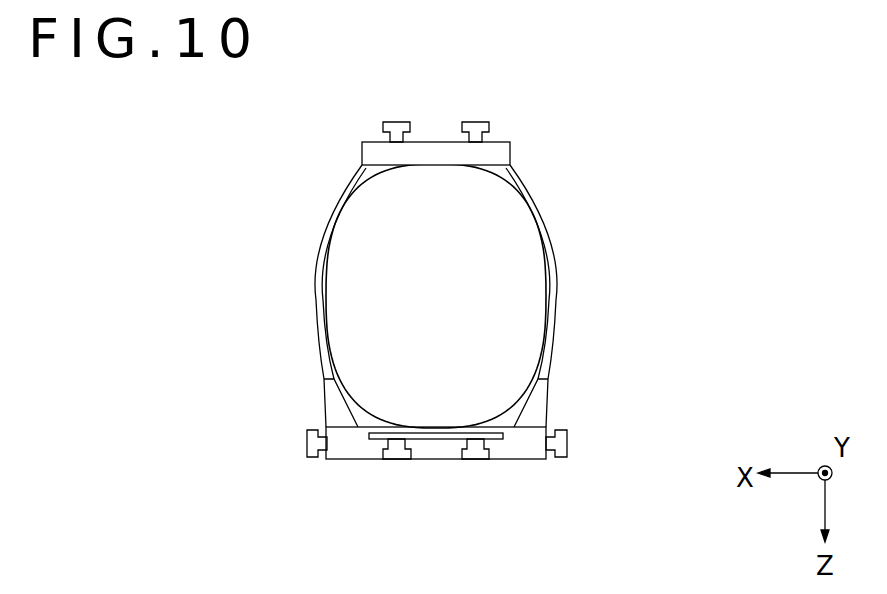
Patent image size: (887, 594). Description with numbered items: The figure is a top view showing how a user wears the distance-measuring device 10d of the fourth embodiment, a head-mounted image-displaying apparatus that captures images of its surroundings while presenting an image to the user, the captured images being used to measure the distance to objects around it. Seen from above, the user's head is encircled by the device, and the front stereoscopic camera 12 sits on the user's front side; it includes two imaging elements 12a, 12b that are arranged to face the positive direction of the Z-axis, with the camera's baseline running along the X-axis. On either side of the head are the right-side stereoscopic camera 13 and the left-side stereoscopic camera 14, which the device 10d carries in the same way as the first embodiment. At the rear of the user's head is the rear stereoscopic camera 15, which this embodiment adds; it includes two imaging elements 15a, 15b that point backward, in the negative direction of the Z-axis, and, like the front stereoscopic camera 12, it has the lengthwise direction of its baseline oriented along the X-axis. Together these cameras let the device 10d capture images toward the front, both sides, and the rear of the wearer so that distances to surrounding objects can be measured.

The distance-measuring device 10d is at (584, 394).
The front stereoscopic camera 12 is at (436, 501).
The imaging element 12a is at (397, 460).
The imaging element 12b is at (481, 483).
The right-side stereoscopic camera 13 is at (300, 441).
The left-side stereoscopic camera 14 is at (574, 442).
The rear stereoscopic camera 15 is at (435, 80).
The imaging element 15a is at (480, 100).
The imaging element 15b is at (393, 122).